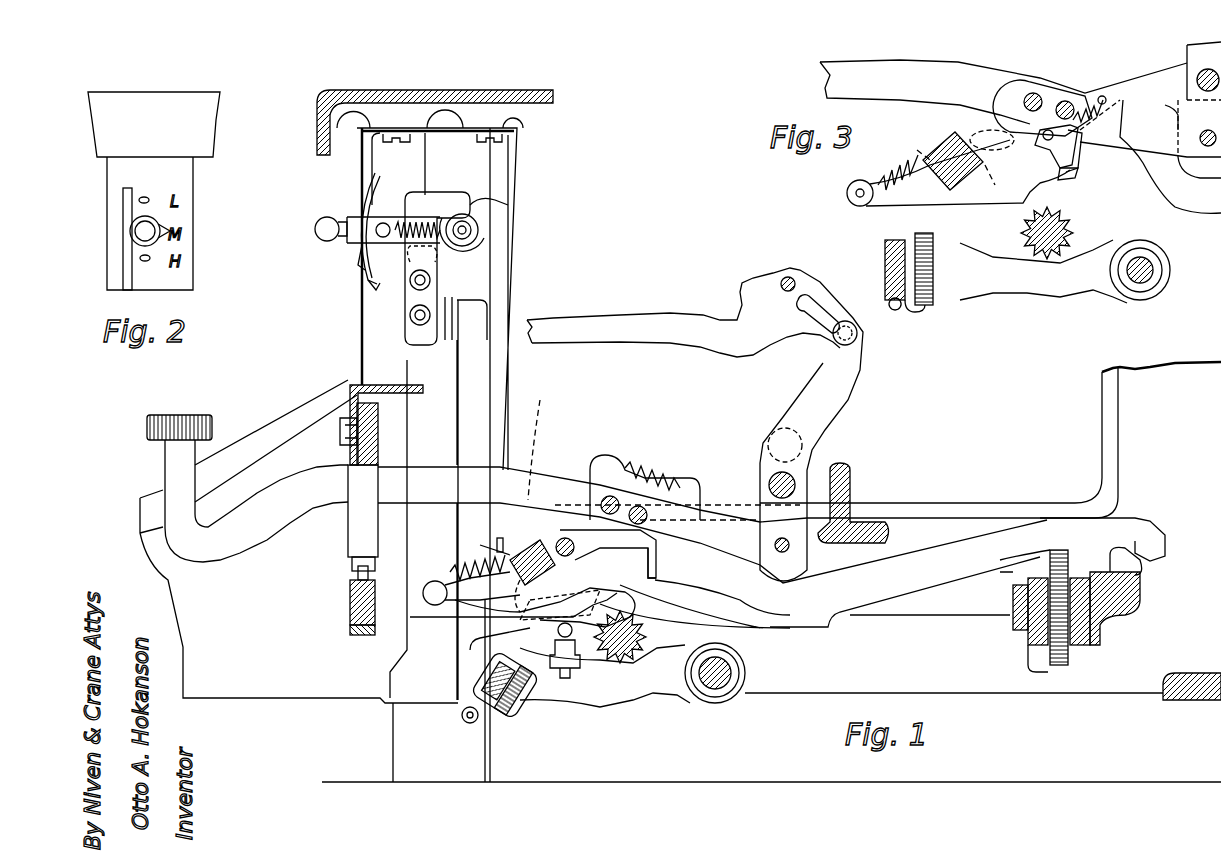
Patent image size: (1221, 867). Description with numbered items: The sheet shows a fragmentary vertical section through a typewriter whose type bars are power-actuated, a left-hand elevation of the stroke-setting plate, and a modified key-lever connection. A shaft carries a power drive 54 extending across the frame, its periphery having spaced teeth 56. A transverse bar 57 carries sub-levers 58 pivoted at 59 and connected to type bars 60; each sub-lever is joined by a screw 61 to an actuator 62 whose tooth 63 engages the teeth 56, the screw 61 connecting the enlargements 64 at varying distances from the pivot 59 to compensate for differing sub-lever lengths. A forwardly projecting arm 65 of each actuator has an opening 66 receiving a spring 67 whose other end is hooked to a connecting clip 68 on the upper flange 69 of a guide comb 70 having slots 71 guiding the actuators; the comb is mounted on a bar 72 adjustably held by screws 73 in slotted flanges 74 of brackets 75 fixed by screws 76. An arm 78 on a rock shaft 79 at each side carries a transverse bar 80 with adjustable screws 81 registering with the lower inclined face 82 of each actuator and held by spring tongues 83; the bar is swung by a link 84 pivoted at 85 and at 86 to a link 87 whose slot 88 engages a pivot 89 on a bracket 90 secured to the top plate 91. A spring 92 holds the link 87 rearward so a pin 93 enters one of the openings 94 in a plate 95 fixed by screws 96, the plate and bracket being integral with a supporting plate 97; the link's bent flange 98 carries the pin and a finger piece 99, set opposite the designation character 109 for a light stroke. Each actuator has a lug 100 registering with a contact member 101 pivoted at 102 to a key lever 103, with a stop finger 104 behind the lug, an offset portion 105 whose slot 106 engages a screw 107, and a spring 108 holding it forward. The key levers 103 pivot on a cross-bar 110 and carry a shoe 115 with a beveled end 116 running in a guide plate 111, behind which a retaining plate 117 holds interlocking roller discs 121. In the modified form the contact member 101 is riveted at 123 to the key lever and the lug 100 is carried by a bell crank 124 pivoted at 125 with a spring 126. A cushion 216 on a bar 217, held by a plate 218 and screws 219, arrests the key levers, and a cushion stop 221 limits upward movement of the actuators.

In FIG. 1, the actuator cylinder or power drive 54 is at (700, 615).
In FIG. 1, the teeth 56 is at (648, 637).
In FIG. 1, the bar 57 is at (860, 535).
In FIG. 1, the sub-levers 58 is at (830, 392).
In FIG. 1, the pivot 59 is at (790, 550).
In FIG. 1, the type bars 60 is at (670, 330).
In FIG. 1, the screw 61 is at (795, 480).
In FIG. 3, the actuator 62 is at (1040, 172).
In FIG. 1, the actuator 62 is at (650, 548).
In FIG. 1, the tooth 63 is at (556, 628).
In FIG. 1, the enlargements 64 is at (800, 450).
In FIG. 1, the arm 65 is at (460, 605).
In FIG. 1, the opening 66 is at (435, 585).
In FIG. 1, the spring 67 is at (455, 570).
In FIG. 1, the connecting clip 68 is at (499, 540).
In FIG. 1, the upper flange 69 is at (530, 540).
In FIG. 1, the guide comb 70 is at (545, 545).
In FIG. 1, the slots 71 is at (570, 549).
In FIG. 1, the bar 72 is at (485, 545).
In FIG. 1, the screws 73 is at (480, 636).
In FIG. 1, the flanges 74 is at (560, 612).
In FIG. 1, the brackets 75 is at (600, 598).
In FIG. 1, the screws 76 is at (562, 540).
In FIG. 1, the arm 78 is at (630, 700).
In FIG. 1, the rock shaft 79 is at (740, 665).
In FIG. 1, the transverse bar 80 is at (540, 705).
In FIG. 1, the adjustable screws 81 is at (535, 720).
In FIG. 1, the lower inclined face 82 is at (490, 640).
In FIG. 1, the spring tongues 83 is at (510, 722).
In FIG. 1, the link 84 is at (458, 416).
In FIG. 1, the pivot 85 is at (462, 716).
In FIG. 1, the pivot 86 is at (380, 180).
In FIG. 1, the link 87 is at (377, 248).
In FIG. 1, the slot 88 is at (500, 205).
In FIG. 1, the pivot 89 is at (483, 238).
In FIG. 1, the bracket 90 is at (500, 170).
In FIG. 1, the top plate 91 is at (508, 92).
In FIG. 1, the spring 92 is at (438, 262).
In FIG. 1, the pin 93 is at (350, 245).
In FIG. 2, the openings 94 is at (146, 198).
In FIG. 1, the openings 94 is at (360, 200).
In FIG. 1, the plate 95 is at (365, 287).
In FIG. 1, the screws 96 is at (485, 140).
In FIG. 1, the supporting plate 97 is at (523, 118).
In FIG. 1, the flange 98 is at (345, 214).
In FIG. 2, the finger piece 99 is at (140, 235).
In FIG. 1, the finger piece 99 is at (315, 229).
In FIG. 3, the lug 100 is at (1075, 178).
In FIG. 1, the lug 100 is at (655, 590).
In FIG. 3, the contact member 101 is at (1080, 140).
In FIG. 1, the contact member 101 is at (660, 565).
In FIG. 1, the pivot 102 is at (655, 478).
In FIG. 3, the key lever 103 is at (978, 75).
In FIG. 1, the key lever 103 is at (515, 490).
In FIG. 1, the stop finger 104 is at (700, 570).
In FIG. 1, the offset portion 105 is at (665, 470).
In FIG. 1, the slot 106 is at (650, 480).
In FIG. 1, the screw 107 is at (630, 470).
In FIG. 1, the spring 108 is at (660, 500).
In FIG. 2, the designation character 109 is at (190, 262).
In FIG. 1, the cross-bar 110 is at (1105, 605).
In FIG. 1, the guide plate 111 is at (352, 620).
In FIG. 1, the shoe 115 is at (348, 523).
In FIG. 1, the beveled end 116 is at (352, 555).
In FIG. 1, the retaining plate 117 is at (350, 595).
In FIG. 1, the roller discs 121 is at (358, 572).
In FIG. 3, the rivets 123 is at (1063, 100).
In FIG. 3, the bell crank 124 is at (965, 160).
In FIG. 3, the pivot 125 is at (1020, 125).
In FIG. 3, the spring 126 is at (1095, 95).
In FIG. 1, the stop or cushion 216 is at (348, 460).
In FIG. 1, the bar 217 is at (345, 386).
In FIG. 1, the plate 218 is at (380, 444).
In FIG. 1, the screws 219 is at (340, 428).
In FIG. 1, the cushion stop 221 is at (555, 400).